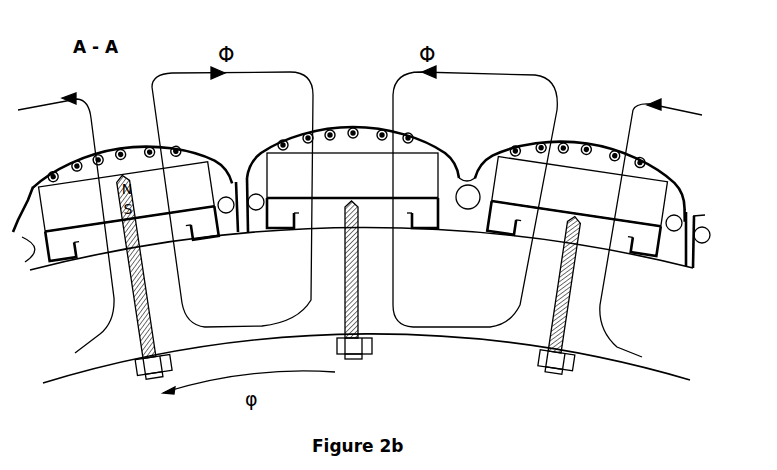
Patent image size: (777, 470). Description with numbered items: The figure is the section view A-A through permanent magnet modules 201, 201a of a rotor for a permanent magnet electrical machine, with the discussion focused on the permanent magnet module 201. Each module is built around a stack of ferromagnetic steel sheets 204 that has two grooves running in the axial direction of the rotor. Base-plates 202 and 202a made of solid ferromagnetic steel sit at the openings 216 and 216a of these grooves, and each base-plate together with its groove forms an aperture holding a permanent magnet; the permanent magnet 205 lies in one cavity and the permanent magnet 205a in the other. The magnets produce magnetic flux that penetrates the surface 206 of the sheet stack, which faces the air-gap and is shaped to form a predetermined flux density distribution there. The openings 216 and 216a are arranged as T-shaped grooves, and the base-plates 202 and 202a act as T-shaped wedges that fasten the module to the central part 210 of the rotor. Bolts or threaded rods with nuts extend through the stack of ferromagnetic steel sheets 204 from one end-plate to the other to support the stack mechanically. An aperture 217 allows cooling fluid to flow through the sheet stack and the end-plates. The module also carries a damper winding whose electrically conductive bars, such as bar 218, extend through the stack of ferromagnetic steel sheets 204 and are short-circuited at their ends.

The permanent magnet module 201 is at (329, 116).
The permanent magnet module 201a is at (130, 144).
The base-plate 202 is at (397, 217).
The base-plate 202a is at (623, 236).
The stack of ferromagnetic steel sheets 204 is at (425, 148).
The permanent magnet 205 is at (430, 185).
The permanent magnet 205a is at (660, 211).
The surface of the stack of ferromagnetic steel sheets 206 is at (343, 127).
The central part of the rotor 210 is at (67, 320).
The opening of the groove 216 is at (310, 221).
The opening of the groove 216a is at (530, 232).
The aperture 217 is at (465, 209).
The electrically conductive bar 218 is at (573, 148).